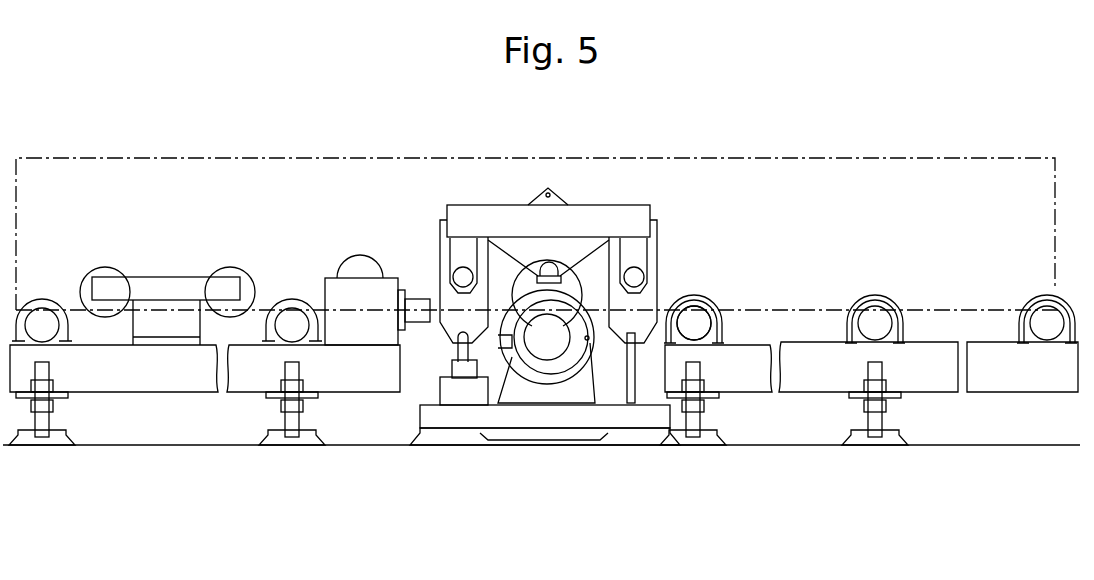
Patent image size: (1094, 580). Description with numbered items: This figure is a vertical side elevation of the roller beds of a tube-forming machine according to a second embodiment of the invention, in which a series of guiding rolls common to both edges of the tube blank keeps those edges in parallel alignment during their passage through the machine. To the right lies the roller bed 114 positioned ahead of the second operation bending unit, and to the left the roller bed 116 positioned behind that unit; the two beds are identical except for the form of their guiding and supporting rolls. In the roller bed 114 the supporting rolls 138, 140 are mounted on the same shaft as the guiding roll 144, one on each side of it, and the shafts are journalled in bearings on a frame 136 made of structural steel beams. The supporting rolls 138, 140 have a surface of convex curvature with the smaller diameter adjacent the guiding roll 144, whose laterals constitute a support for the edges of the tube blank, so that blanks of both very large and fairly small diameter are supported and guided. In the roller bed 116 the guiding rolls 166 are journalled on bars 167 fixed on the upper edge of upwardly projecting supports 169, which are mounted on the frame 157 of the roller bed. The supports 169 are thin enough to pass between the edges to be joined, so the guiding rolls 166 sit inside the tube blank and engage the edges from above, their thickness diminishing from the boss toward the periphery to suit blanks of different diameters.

The roller bed 116 is at (218, 244).
The bar 167 is at (138, 286).
The guiding roll 166 is at (240, 279).
The upwardly projecting support 169 is at (199, 327).
The frame 157 is at (338, 385).
The roller bed 114 is at (795, 242).
The supporting roll 138 is at (690, 320).
The supporting roll 140 is at (715, 307).
The guiding roll 144 is at (870, 306).
The frame 136 is at (805, 383).